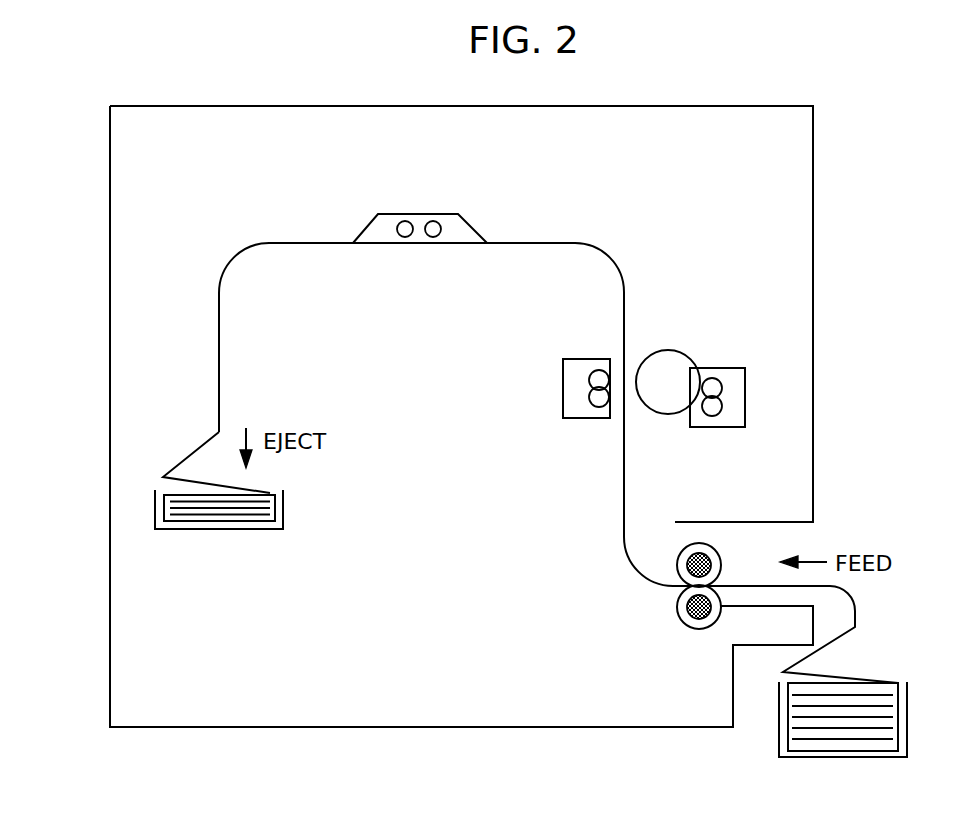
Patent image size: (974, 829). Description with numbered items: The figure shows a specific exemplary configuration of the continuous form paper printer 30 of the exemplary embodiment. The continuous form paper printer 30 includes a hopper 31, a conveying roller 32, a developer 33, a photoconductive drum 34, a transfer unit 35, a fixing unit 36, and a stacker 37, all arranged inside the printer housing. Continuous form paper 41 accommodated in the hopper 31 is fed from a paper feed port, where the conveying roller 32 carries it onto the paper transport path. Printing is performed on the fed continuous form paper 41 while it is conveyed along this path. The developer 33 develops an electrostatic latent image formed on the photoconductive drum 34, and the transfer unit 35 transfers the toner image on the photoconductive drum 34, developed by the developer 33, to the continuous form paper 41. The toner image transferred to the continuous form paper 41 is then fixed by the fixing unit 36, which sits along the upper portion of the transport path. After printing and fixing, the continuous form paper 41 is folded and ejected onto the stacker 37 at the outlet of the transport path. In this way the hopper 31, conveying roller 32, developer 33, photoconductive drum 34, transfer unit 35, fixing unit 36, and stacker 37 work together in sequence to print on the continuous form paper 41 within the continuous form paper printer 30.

The continuous form paper printer 30 is at (813, 266).
The hopper 31 is at (907, 718).
The conveying roller 32 is at (699, 630).
The developer 33 is at (713, 428).
The photoconductive drum 34 is at (668, 350).
The transfer unit 35 is at (563, 386).
The fixing unit 36 is at (420, 214).
The stacker 37 is at (217, 531).
The continuous form paper 41 is at (283, 243).